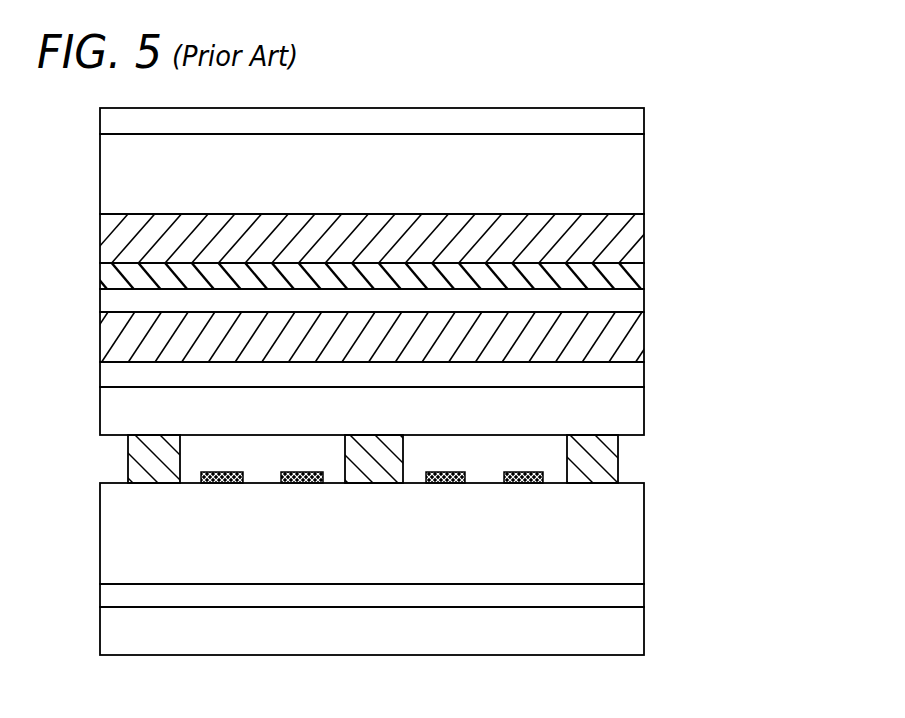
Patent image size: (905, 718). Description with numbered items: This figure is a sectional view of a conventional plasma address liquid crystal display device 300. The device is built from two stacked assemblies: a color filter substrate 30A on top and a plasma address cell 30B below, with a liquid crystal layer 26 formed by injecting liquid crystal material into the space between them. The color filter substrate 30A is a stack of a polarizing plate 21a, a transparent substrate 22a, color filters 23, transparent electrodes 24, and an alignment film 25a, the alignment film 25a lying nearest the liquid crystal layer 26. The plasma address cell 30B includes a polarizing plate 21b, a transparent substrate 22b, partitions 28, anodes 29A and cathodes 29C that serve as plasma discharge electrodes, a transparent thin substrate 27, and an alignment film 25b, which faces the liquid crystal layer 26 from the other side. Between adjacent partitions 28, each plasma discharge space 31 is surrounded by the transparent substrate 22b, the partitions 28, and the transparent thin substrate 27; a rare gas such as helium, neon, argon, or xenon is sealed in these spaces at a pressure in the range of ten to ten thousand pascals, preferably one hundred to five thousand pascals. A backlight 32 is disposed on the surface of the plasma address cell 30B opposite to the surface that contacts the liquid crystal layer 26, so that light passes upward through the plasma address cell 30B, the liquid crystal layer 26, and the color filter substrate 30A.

The plasma address liquid crystal display device 300 is at (513, 73).
The polarizing plate 21a is at (632, 125).
The transparent substrate 22a is at (629, 182).
The color filters 23 is at (632, 243).
The transparent electrodes 24 is at (630, 280).
The alignment film 25a is at (632, 304).
The liquid crystal layer 26 is at (630, 343).
The alignment film 25b is at (632, 377).
The transparent thin substrate 27 is at (632, 418).
The partitions 28 is at (607, 463).
The anodes 29A is at (527, 485).
The cathodes 29C is at (448, 485).
The transparent substrate 22b is at (635, 567).
The polarizing plate 21b is at (635, 600).
The backlight 32 is at (632, 642).
The plasma discharge spaces 31 is at (195, 453).
The color filter substrate 30A is at (755, 115).
The plasma address cell 30B is at (755, 373).